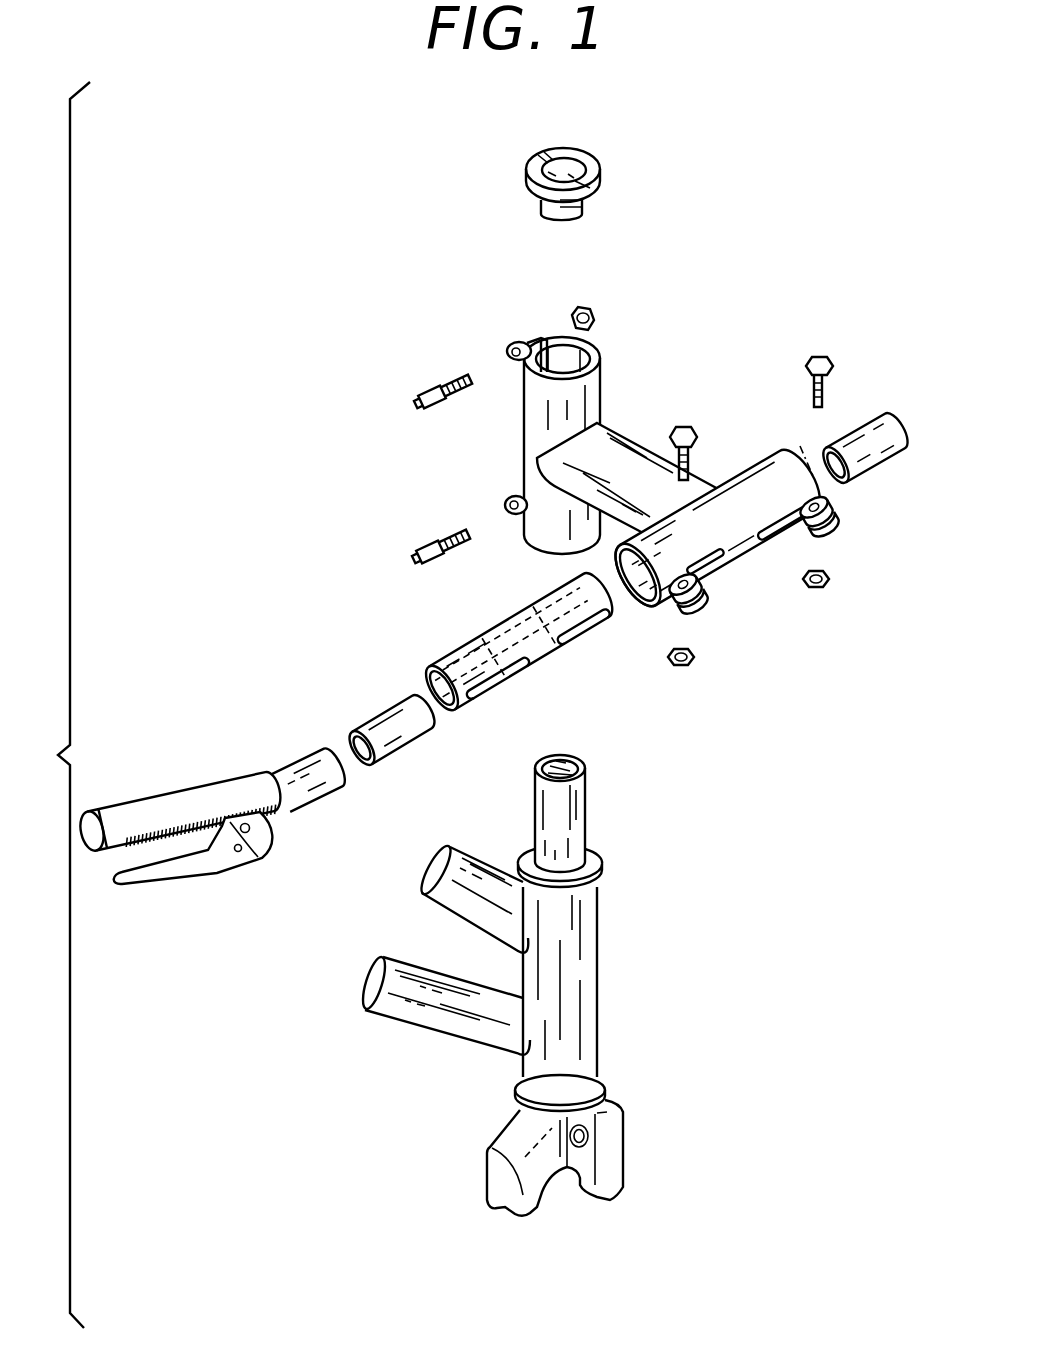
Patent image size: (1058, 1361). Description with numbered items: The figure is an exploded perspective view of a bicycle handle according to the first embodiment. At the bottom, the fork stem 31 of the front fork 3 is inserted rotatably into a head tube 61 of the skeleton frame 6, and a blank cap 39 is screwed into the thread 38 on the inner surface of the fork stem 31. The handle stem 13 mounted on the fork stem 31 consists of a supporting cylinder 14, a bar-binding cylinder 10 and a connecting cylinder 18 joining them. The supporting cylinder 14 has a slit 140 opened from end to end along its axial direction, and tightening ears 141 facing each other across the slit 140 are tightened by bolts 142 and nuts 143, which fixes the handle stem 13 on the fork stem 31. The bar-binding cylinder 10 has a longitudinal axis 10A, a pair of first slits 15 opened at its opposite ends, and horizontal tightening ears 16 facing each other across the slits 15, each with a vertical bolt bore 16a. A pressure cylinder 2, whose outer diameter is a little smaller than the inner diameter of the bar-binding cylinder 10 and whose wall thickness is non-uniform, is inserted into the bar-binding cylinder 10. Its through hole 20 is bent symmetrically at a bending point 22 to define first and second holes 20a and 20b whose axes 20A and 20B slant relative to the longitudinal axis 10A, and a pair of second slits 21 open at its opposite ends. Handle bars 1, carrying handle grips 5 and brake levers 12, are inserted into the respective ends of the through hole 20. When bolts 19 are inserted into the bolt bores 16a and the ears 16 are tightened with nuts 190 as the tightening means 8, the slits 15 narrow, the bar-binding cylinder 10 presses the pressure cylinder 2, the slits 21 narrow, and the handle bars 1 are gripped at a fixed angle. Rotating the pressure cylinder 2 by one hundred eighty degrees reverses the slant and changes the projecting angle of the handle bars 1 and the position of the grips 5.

The handle bar 1 is at (328, 768).
The pressure cylinder 2 is at (478, 665).
The front fork 3 is at (586, 961).
The handle grip 5 is at (185, 800).
The skeleton frame 6 is at (414, 1064).
The tightening means 8 is at (751, 390).
The bar-binding cylinder 10 is at (750, 483).
The longitudinal axis 10A is at (798, 450).
The brake lever 12 is at (170, 870).
The handle stem 13 is at (636, 418).
The supporting cylinder 14 is at (508, 431).
The first slit 15 is at (772, 535).
The tightening ear 16 is at (835, 515).
The vertical bolt bore 16a is at (825, 533).
The connecting cylinder 18 is at (628, 507).
The bolt 19 is at (813, 360).
The through hole 20 is at (433, 685).
The axis of first hole 20A is at (490, 703).
The axis of second hole 20B is at (592, 640).
The first hole 20a is at (467, 653).
The second hole 20b is at (547, 593).
The second slit 21 is at (567, 650).
The bending point 22 is at (487, 627).
The fork stem 31 is at (553, 812).
The thread 38 is at (572, 756).
The blank cap 39 is at (595, 158).
The head tube 61 is at (580, 953).
The slit 140 is at (543, 350).
The tightening ear 141 is at (506, 503).
The bolt 142 is at (422, 547).
The nut 143 is at (593, 310).
The nut 190 is at (838, 643).